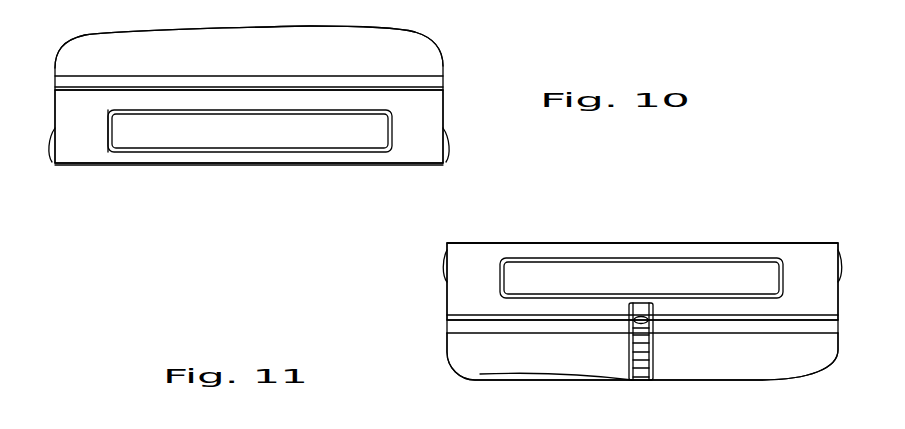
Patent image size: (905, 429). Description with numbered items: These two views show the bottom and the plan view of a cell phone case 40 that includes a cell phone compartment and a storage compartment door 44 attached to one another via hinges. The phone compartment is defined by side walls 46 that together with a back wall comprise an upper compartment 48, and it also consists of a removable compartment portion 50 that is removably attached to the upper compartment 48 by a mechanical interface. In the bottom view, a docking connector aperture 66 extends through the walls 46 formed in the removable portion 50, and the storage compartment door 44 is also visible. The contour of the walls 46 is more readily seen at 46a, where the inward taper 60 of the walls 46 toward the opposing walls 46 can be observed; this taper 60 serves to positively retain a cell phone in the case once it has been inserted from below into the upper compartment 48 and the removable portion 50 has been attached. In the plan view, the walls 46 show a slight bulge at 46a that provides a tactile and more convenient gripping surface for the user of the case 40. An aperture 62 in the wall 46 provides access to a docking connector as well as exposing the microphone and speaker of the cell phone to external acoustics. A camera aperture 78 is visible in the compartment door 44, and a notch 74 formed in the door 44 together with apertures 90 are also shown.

In FIG. 10, the cell phone case 40 is at (135, 206).
In FIG. 11, the cell phone case 40 is at (443, 360).
In FIG. 10, the storage compartment door 44 is at (165, 27).
In FIG. 11, the storage compartment door 44 is at (667, 383).
In FIG. 10, the side walls 46 is at (430, 152).
In FIG. 11, the side walls 46 is at (492, 302).
In FIG. 10, the bulge of walls 46a is at (52, 150).
In FIG. 11, the bulge of walls 46a is at (443, 262).
In FIG. 11, the upper compartment 48 is at (623, 243).
In FIG. 10, the removable compartment portion 50 is at (290, 165).
In FIG. 10, the inward taper 60 is at (452, 166).
In FIG. 11, the aperture 62 is at (783, 278).
In FIG. 10, the docking connector aperture 66 is at (107, 121).
In FIG. 11, the notch 74 is at (655, 367).
In FIG. 11, the camera aperture 78 is at (518, 373).
In FIG. 11, the apertures 90 is at (638, 314).